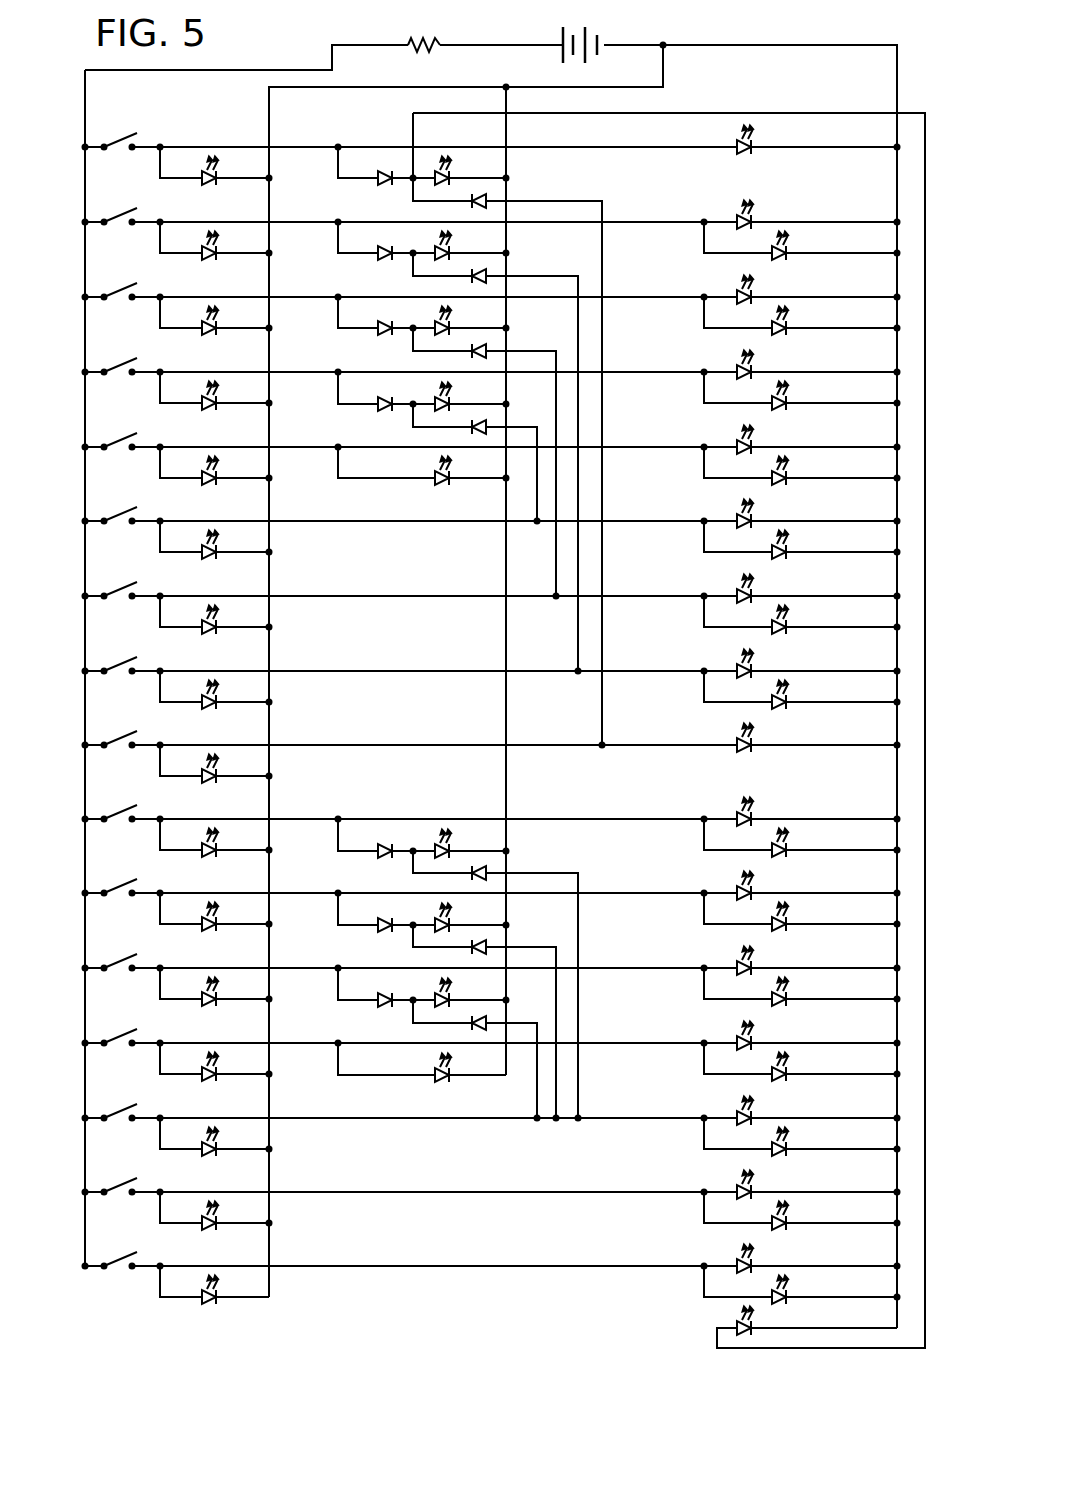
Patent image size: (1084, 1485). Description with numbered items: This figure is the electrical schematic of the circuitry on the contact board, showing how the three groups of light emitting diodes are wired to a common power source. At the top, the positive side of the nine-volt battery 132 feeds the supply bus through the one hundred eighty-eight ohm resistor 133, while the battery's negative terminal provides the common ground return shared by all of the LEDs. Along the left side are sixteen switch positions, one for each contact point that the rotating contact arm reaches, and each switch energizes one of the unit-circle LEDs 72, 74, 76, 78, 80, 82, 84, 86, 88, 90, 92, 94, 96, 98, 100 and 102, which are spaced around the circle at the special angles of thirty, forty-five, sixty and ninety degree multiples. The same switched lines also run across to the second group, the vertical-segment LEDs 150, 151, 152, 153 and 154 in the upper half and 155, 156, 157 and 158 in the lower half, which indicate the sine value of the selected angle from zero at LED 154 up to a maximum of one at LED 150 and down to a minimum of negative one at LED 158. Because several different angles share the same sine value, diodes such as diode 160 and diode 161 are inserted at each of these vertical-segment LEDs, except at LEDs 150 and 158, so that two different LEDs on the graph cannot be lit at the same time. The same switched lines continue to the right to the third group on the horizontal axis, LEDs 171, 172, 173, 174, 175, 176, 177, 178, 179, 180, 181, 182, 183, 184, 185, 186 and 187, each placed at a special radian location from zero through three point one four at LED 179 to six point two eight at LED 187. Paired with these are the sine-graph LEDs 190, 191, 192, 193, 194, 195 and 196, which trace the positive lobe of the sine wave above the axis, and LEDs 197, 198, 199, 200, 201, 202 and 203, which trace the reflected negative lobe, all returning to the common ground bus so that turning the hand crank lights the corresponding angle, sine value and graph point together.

The LED 72 is at (217, 180).
The LED 74 is at (217, 255).
The LED 76 is at (217, 330).
The LED 78 is at (217, 405).
The LED 80 is at (217, 480).
The LED 82 is at (217, 554).
The LED 84 is at (217, 629).
The LED 86 is at (217, 704).
The LED 88 is at (217, 778).
The LED 90 is at (217, 852).
The LED 92 is at (217, 926).
The LED 94 is at (217, 1001).
The LED 96 is at (217, 1076).
The LED 98 is at (217, 1151).
The LED 100 is at (217, 1225).
The LED 102 is at (217, 1299).
The battery 132 is at (604, 36).
The resistor 133 is at (440, 16).
The LED 150 is at (449, 480).
The LED 151 is at (450, 398).
The LED 152 is at (450, 322).
The LED 153 is at (450, 247).
The LED 154 is at (450, 172).
The LED 155 is at (450, 845).
The LED 156 is at (450, 919).
The LED 157 is at (450, 994).
The LED 158 is at (450, 1069).
The diode 160 is at (470, 430).
The diode 161 is at (393, 408).
The LED 171 is at (752, 149).
The LED 172 is at (752, 217).
The LED 173 is at (752, 292).
The LED 174 is at (752, 367).
The LED 175 is at (752, 442).
The LED 176 is at (752, 516).
The LED 177 is at (752, 591).
The LED 178 is at (752, 666).
The LED 179 is at (752, 740).
The LED 180 is at (752, 814).
The LED 181 is at (752, 888).
The LED 182 is at (752, 963).
The LED 183 is at (752, 1038).
The LED 184 is at (752, 1113).
The LED 185 is at (752, 1187).
The LED 186 is at (752, 1261).
The LED 187 is at (752, 1323).
The LED 190 is at (787, 248).
The LED 191 is at (787, 323).
The LED 192 is at (787, 398).
The LED 193 is at (787, 473).
The LED 194 is at (787, 547).
The LED 195 is at (787, 622).
The LED 196 is at (787, 697).
The LED 197 is at (787, 845).
The LED 198 is at (787, 919).
The LED 199 is at (787, 994).
The LED 200 is at (787, 1069).
The LED 201 is at (787, 1144).
The LED 202 is at (787, 1218).
The LED 203 is at (787, 1292).